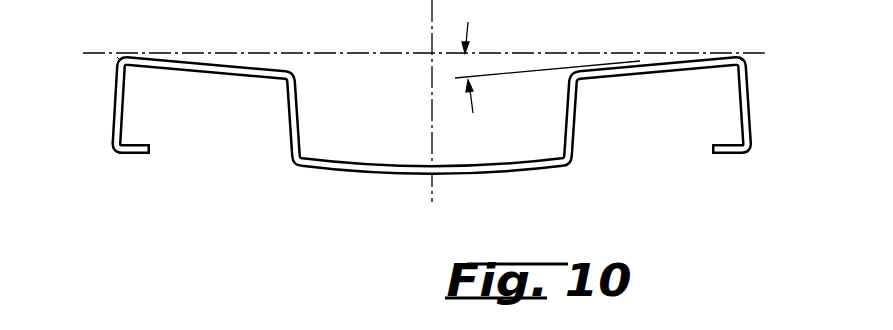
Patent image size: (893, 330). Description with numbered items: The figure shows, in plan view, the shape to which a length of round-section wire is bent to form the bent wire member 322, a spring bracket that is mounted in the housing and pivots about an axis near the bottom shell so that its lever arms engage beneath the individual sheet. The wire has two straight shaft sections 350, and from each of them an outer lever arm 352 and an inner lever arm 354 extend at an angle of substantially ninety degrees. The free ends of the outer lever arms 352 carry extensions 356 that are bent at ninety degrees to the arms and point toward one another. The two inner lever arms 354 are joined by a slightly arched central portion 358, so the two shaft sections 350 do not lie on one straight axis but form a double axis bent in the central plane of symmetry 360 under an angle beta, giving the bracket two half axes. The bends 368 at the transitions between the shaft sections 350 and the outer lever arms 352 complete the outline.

The bent wire member 322 is at (377, 172).
The straight shaft section 350 is at (239, 66).
The outer lever arm 352 is at (115, 100).
The inner lever arm 354 is at (292, 111).
The extension 356 is at (134, 150).
The slightly arched central portion 358 is at (495, 172).
The central plane of symmetry 360 is at (430, 15).
The outer corner / bend 368 is at (120, 57).